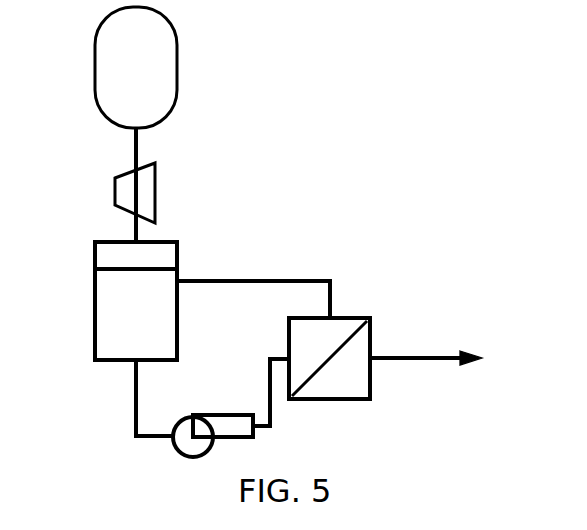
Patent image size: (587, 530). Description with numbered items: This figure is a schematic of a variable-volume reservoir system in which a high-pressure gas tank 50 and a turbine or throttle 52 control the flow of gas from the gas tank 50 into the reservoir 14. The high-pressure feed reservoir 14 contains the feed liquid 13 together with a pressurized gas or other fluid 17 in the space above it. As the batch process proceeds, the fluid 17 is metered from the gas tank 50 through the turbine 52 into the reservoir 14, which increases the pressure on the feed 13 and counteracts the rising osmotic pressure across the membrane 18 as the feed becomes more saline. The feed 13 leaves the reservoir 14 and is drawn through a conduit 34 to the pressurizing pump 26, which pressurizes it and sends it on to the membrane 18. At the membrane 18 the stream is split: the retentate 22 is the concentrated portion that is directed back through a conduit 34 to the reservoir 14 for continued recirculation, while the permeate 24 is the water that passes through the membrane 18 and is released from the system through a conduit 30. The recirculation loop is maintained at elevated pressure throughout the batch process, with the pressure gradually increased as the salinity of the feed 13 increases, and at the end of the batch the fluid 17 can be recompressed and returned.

The high-pressure gas tank 50 is at (122, 78).
The turbine or throttle 52 is at (123, 207).
The feed liquid 13 is at (118, 324).
The pressurized gas or other fluid 17 is at (113, 256).
The reservoir 14 is at (178, 262).
The conduit 34 is at (222, 280).
The retentate 22 is at (299, 352).
The permeate 24 is at (332, 390).
The membrane 18 is at (349, 330).
The conduit 30 is at (405, 357).
The pressurizing pump 26 is at (190, 438).